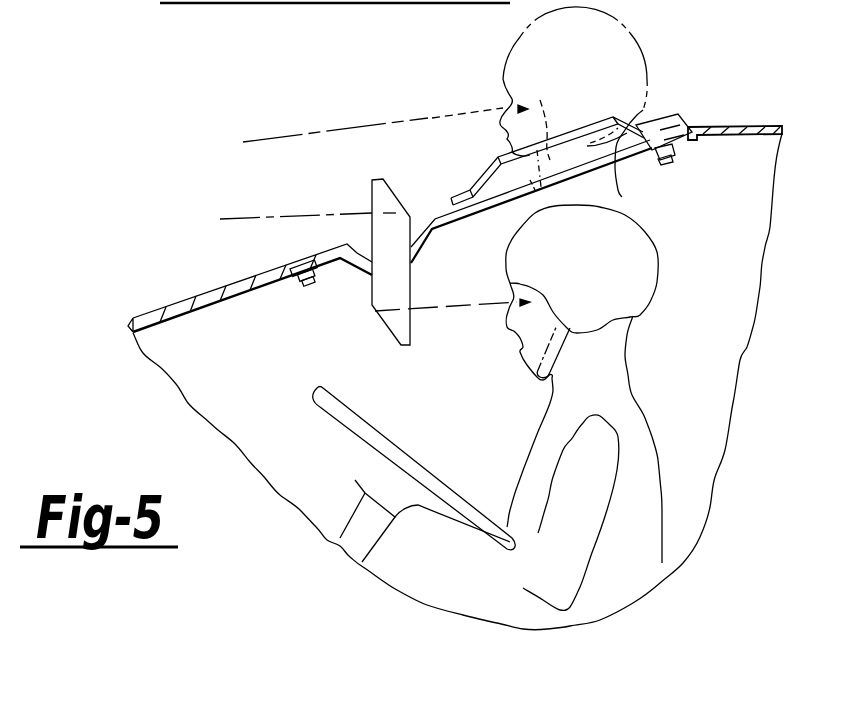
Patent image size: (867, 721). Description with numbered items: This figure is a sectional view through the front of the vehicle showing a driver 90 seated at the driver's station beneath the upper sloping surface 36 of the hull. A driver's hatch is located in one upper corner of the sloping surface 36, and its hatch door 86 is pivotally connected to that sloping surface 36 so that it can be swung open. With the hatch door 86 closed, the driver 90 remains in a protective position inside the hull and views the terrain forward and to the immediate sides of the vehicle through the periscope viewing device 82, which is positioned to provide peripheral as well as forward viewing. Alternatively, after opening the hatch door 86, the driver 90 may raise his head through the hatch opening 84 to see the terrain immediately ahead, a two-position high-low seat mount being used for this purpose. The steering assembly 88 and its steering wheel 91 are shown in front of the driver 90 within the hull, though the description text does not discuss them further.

The sloping surface 36 is at (190, 300).
The periscope viewing device 82 is at (383, 200).
The hatch opening 84 is at (640, 143).
The hatch door 86 is at (500, 157).
The steering assembly 88 is at (384, 436).
The driver 90 is at (627, 400).
The steering wheel 91 is at (363, 430).